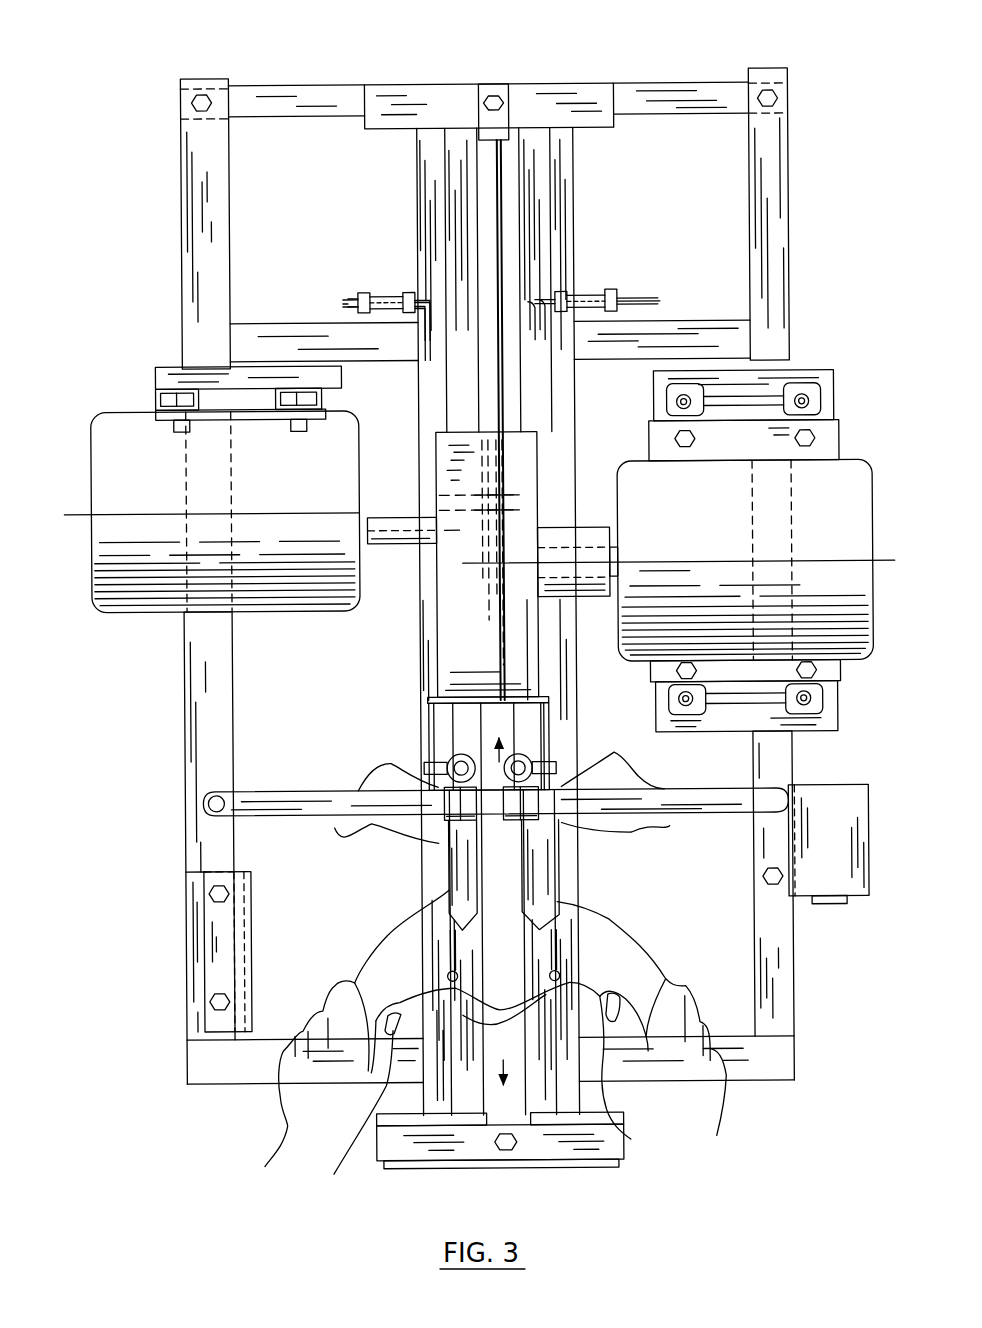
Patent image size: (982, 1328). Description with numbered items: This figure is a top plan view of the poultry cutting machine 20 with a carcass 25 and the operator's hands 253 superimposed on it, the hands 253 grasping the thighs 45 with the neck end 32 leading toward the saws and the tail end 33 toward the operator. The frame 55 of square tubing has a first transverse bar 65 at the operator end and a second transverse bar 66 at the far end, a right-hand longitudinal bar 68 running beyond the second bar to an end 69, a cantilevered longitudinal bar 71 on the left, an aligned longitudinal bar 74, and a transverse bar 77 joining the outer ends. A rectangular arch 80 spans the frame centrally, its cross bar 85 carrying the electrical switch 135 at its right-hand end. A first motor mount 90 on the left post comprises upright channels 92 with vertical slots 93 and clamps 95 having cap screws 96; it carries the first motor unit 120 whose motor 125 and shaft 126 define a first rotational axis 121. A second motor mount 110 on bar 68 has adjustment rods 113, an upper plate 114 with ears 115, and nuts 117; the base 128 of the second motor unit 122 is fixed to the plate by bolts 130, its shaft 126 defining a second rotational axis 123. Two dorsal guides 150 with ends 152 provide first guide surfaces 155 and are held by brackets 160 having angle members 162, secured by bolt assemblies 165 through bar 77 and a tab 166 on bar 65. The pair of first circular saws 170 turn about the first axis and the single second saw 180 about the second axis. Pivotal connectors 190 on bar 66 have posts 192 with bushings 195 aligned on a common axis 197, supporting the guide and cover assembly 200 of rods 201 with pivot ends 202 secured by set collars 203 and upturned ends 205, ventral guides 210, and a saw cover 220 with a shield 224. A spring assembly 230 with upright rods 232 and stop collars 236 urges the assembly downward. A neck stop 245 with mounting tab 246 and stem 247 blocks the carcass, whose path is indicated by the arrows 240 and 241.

The poultry cutting machine 20 is at (152, 245).
The poultry carcass 25 is at (630, 930).
The neck end 32 is at (522, 760).
The tail end 33 is at (437, 1112).
The thighs 45 is at (390, 957).
The frame 55 is at (183, 62).
The first transverse horizontal bar 65 is at (760, 1085).
The second transverse horizontal bar 66 is at (690, 328).
The right-hand longitudinal bar 68 is at (780, 766).
The end of right-hand longitudinal bar 69 is at (790, 95).
The horizontal longitudinal bar 71 is at (190, 938).
The longitudinal bar 74 is at (186, 284).
The horizontal transverse bar 77 is at (702, 86).
The rectangular arch 80 is at (496, 800).
The cross bar 85 is at (303, 796).
The first motor mount 90 is at (500, 390).
The upright channels 92 is at (312, 376).
The vertical slot 93 is at (230, 418).
The clamps 95 is at (140, 384).
The cap screw 96 is at (183, 432).
The second motor mount 110 is at (782, 542).
The adjustment rods 113 is at (800, 398).
The upper horizontal plate 114 is at (838, 686).
The ears 115 is at (792, 410).
The nuts 117 is at (680, 700).
The first motor unit 120 is at (434, 494).
The first rotational axis 121 is at (434, 511).
The second motor unit 122 is at (765, 554).
The second rotational axis 123 is at (845, 560).
The motor 125 is at (272, 494).
The shaft 126 is at (366, 528).
The base 128 is at (160, 418).
The bolts 130 is at (800, 665).
The electrical switch 135 is at (850, 810).
The dorsal guides 150 is at (501, 1170).
The ends of dorsal guides 152 is at (430, 135).
The first guide surfaces 155 is at (440, 1125).
The brackets 160 is at (604, 78).
The horizontal angle member 162 is at (386, 100).
The bolt assemblies 165 is at (494, 92).
The horizontal tab 166 is at (540, 1160).
The first circular saws 170 is at (525, 425).
The second circular saw 180 is at (503, 655).
The pivotal connectors 190 is at (504, 292).
The posts 192 is at (402, 334).
The cylindrical bushings 195 is at (600, 318).
The horizontal axis 197 is at (352, 302).
The guide and cover assembly 200 is at (436, 568).
The cylindrical rods 201 is at (472, 385).
The pivot end 202 is at (462, 345).
The set collars 203 is at (608, 290).
The upturned end 205 is at (556, 966).
The ventral guides 210 is at (465, 870).
The saw cover 220 is at (444, 624).
The shield 224 is at (565, 528).
The spring assembly 230 is at (447, 761).
The upright rods 232 is at (456, 755).
The stop collar 236 is at (430, 768).
The arrow indicating first direction 240 is at (558, 835).
The arrow indicating reverse direction 241 is at (470, 1025).
The neck stop 245 is at (512, 232).
The mounting tab 246 is at (508, 125).
The stem 247 is at (503, 195).
The hands of operator 253 is at (725, 1175).